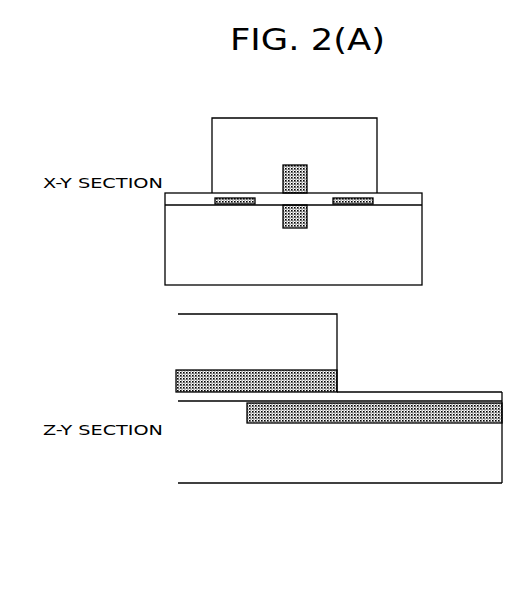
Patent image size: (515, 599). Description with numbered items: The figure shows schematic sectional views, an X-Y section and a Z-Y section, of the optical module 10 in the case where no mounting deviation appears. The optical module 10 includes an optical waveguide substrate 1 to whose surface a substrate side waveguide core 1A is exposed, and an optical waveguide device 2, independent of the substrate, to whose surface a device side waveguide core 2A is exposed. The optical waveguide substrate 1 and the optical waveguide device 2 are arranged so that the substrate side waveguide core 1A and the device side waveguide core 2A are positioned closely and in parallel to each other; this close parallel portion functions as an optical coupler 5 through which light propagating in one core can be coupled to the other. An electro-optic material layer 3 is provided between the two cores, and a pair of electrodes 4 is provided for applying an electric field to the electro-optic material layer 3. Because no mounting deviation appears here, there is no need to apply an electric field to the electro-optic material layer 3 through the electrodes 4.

The optical waveguide substrate 1 is at (405, 258).
The substrate side waveguide core 1A is at (297, 225).
The optical waveguide device 2 is at (350, 125).
The device side waveguide core 2A is at (293, 167).
The electro-optic material layer 3 is at (403, 198).
The electrode 4 is at (218, 196).
The optical coupler 5 is at (277, 185).
The optical module 10 is at (157, 245).